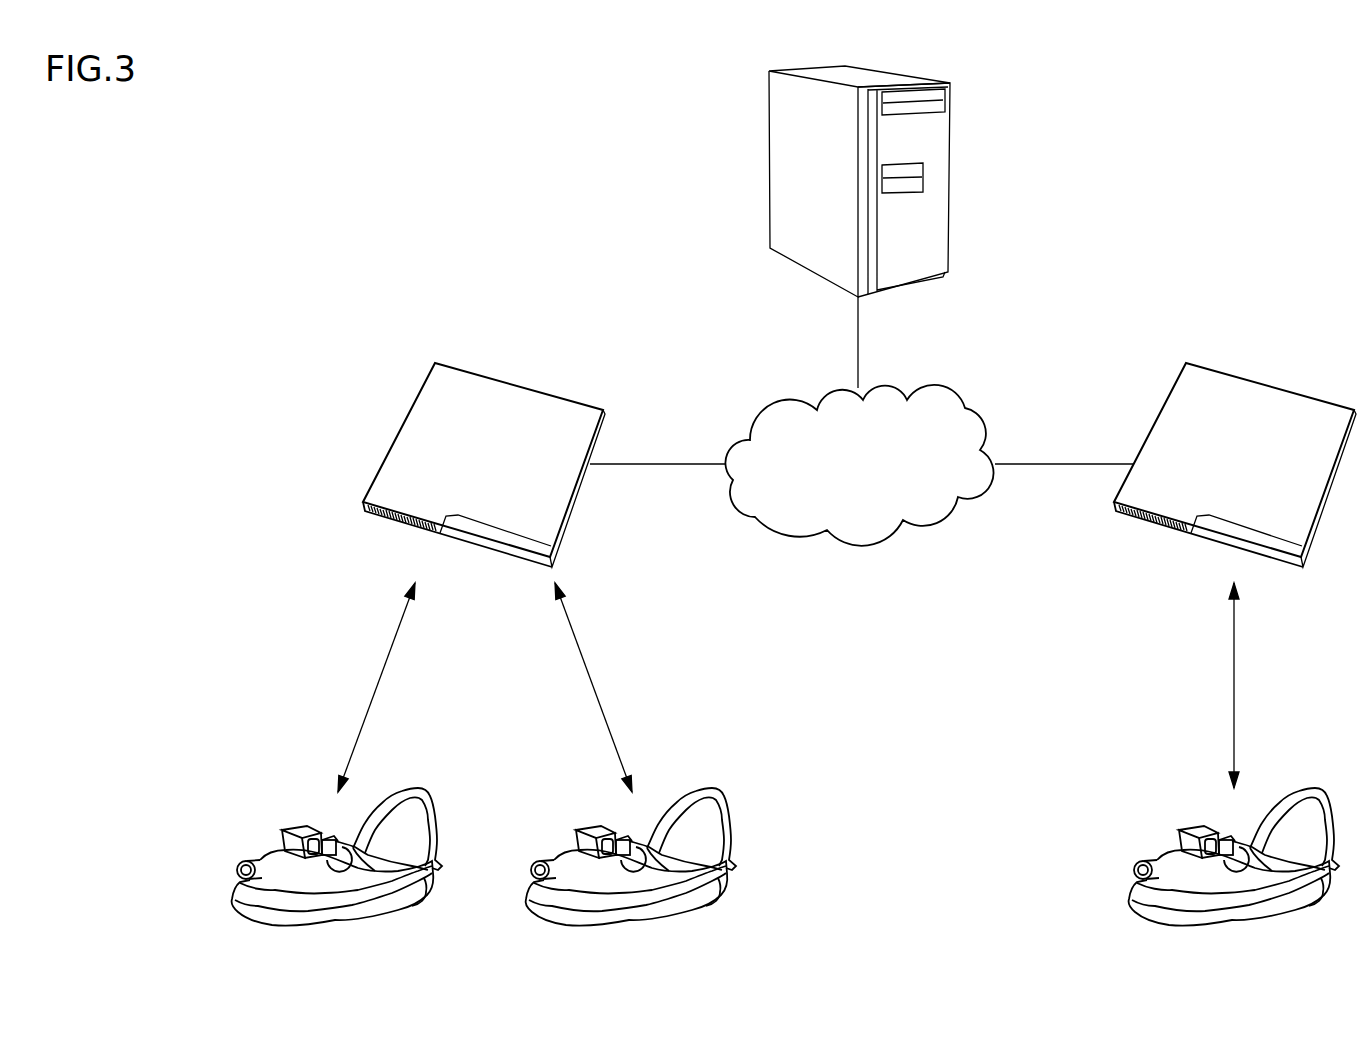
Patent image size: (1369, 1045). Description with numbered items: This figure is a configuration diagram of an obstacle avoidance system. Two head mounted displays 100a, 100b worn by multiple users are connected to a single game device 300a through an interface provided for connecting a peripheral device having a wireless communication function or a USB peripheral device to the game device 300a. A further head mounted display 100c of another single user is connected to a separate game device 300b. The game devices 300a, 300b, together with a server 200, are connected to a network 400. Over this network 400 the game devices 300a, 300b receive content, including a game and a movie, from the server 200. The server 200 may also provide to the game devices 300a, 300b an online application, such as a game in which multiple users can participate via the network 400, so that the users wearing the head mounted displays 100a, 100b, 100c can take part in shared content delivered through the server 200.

The head mounted display 100a is at (270, 852).
The head mounted display 100b is at (564, 852).
The head mounted display 100c is at (1167, 852).
The server 200 is at (952, 178).
The game device 300a is at (522, 385).
The game device 300b is at (1273, 385).
The network 400 is at (950, 387).